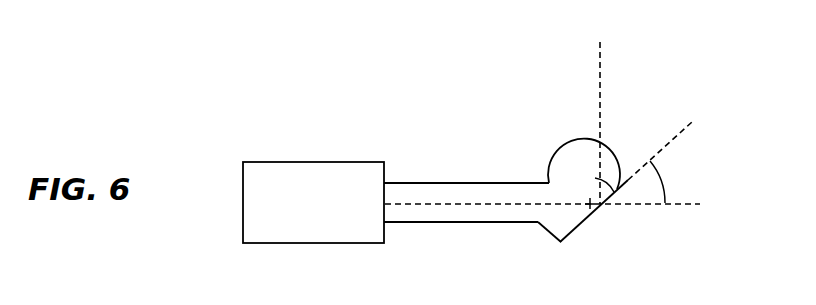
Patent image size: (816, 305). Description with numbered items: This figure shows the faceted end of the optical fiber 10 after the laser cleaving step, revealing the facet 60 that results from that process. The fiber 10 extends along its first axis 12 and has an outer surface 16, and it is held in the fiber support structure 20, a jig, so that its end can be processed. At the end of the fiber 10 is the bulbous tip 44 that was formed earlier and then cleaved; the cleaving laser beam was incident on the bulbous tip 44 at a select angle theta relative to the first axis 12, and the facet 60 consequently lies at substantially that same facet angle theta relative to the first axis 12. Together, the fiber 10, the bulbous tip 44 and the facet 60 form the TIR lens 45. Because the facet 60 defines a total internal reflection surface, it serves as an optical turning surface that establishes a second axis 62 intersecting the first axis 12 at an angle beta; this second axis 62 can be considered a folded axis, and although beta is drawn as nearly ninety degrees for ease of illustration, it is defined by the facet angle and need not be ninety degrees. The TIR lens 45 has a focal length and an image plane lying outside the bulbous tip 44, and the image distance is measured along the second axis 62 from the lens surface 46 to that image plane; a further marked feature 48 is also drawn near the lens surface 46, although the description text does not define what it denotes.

The optical fiber 10 is at (389, 132).
The first axis 12 is at (401, 204).
The outer surface 16 is at (464, 183).
The fiber support structure 20 is at (325, 218).
The bulbous tip 44 is at (558, 228).
The TIR lens 45 is at (614, 153).
The lens surface 46 is at (553, 172).
The center of curvature 48 is at (589, 204).
The facet 60 is at (584, 221).
The second axis 62 is at (601, 52).